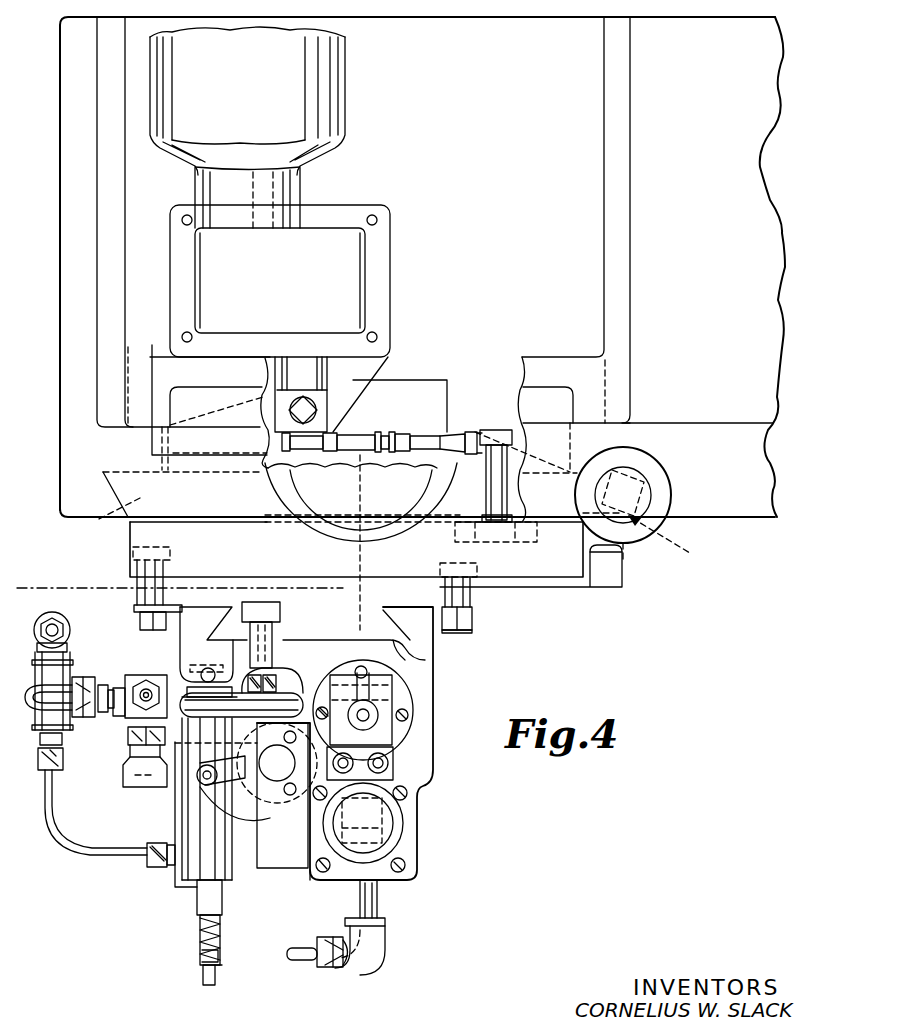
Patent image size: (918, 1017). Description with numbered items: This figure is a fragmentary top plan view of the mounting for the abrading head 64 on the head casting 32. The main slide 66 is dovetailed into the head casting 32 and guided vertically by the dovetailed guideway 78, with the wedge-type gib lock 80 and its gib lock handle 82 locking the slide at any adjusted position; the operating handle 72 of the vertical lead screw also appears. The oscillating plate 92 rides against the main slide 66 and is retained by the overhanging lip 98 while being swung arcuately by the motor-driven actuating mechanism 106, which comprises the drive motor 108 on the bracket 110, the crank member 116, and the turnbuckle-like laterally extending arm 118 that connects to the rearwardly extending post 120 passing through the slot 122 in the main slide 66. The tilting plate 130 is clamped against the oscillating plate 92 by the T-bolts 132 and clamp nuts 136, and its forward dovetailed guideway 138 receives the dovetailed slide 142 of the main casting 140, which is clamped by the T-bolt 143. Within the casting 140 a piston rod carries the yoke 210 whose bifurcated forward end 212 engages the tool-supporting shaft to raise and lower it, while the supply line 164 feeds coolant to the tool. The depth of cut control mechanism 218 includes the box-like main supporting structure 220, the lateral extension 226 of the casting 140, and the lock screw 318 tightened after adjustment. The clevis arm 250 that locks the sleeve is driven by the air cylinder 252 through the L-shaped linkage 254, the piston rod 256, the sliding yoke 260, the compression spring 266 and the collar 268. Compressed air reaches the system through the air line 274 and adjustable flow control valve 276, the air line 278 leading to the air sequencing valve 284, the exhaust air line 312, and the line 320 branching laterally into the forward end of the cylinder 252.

The head casting 32 is at (68, 284).
The drive motor 108 is at (340, 57).
The motor-driven actuating mechanism 106 is at (345, 220).
The bracket 110 is at (390, 250).
The crank member 116 is at (325, 400).
The laterally extending arm 118 is at (282, 440).
The operating handle 72 is at (272, 497).
The slot 122 is at (452, 497).
The rearwardly extending post 120 is at (507, 498).
The gib lock handle 82 is at (590, 466).
The dovetailed guideway 78 is at (648, 487).
The gib lock 80 is at (670, 540).
The main slide 66 is at (120, 514).
The overhanging lip 98 is at (570, 584).
The oscillating plate 92 is at (620, 570).
The T-bolts 132 is at (170, 553).
The clamp nuts 136 is at (140, 612).
The dovetailed slide 142 is at (220, 612).
The T-bolt 143 is at (290, 640).
The main casting 140 is at (430, 692).
The dovetailed guideway 138 is at (405, 660).
The tilting plate 130 is at (447, 632).
The yoke 210 is at (385, 733).
The bifurcated forward end 212 is at (400, 828).
The abrading head 64 is at (418, 808).
The lateral extension 226 is at (248, 800).
The lock screw 318 is at (240, 812).
The clevis arm 250 is at (202, 803).
The air cylinder 252 is at (178, 885).
The L-shaped linkage 254 is at (207, 893).
The compression spring 266 is at (222, 932).
The collar 268 is at (222, 950).
The piston rod 256 is at (212, 985).
The sliding yoke 260 is at (222, 965).
The box-like main supporting structure 220 is at (308, 876).
The supply line 164 is at (315, 963).
The air line 278 is at (52, 690).
The air line 274 is at (148, 688).
The adjustable flow control valve 276 is at (128, 740).
The air sequencing valve 284 is at (128, 752).
The air line 312 is at (56, 626).
The depth of cut control mechanism 218 is at (166, 830).
The line 320 is at (147, 866).